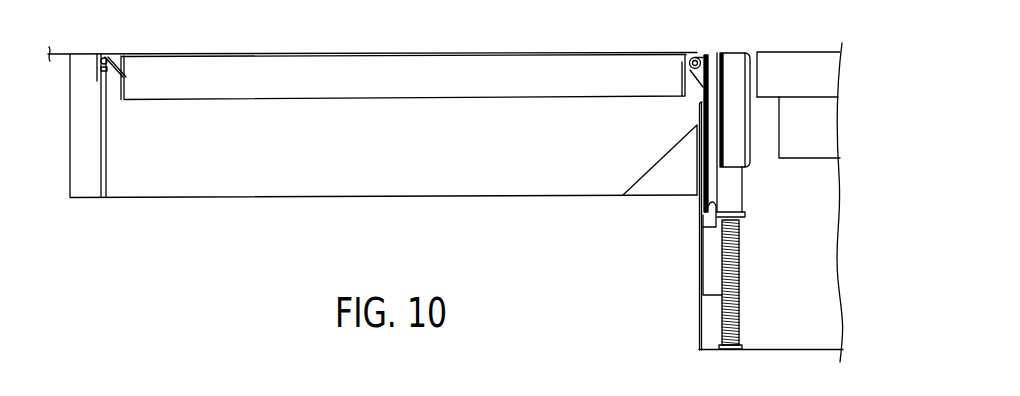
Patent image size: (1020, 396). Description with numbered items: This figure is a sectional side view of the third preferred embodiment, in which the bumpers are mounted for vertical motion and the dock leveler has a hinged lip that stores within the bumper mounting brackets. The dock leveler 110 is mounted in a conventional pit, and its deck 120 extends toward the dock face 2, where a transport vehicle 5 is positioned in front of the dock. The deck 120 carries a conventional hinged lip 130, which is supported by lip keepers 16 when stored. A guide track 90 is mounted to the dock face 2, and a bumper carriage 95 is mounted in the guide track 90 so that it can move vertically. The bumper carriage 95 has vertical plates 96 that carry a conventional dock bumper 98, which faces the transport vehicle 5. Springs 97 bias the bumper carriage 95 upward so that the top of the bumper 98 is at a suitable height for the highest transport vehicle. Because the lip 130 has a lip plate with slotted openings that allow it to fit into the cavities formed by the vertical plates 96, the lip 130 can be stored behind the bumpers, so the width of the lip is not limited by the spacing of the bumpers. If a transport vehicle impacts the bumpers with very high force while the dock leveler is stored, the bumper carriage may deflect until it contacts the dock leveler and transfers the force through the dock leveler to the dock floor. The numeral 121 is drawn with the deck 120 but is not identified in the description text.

The dock leveler 110 is at (345, 55).
The deck 120 is at (386, 33).
The hinge 121 is at (402, 50).
The hinged lip 130 is at (729, 41).
The dock bumper 98 is at (737, 53).
The transport vehicle 5 is at (785, 52).
The bumper carriage 95 is at (722, 192).
The vertical plates 96 is at (757, 194).
The lip keepers 16 is at (718, 213).
The springs 97 is at (740, 274).
The dock face 2 is at (699, 328).
The guide track 90 is at (704, 334).